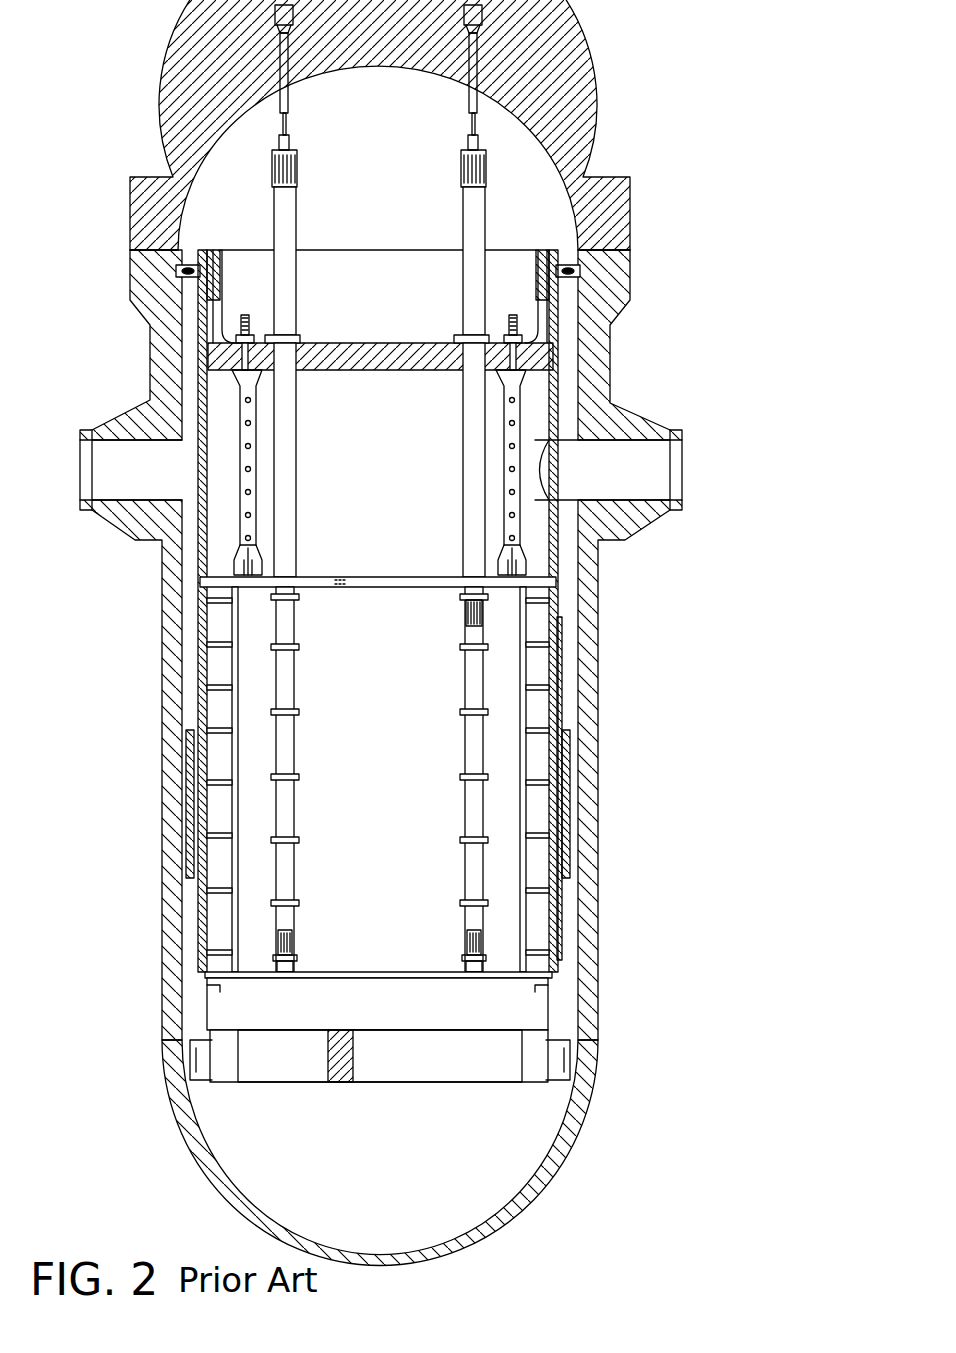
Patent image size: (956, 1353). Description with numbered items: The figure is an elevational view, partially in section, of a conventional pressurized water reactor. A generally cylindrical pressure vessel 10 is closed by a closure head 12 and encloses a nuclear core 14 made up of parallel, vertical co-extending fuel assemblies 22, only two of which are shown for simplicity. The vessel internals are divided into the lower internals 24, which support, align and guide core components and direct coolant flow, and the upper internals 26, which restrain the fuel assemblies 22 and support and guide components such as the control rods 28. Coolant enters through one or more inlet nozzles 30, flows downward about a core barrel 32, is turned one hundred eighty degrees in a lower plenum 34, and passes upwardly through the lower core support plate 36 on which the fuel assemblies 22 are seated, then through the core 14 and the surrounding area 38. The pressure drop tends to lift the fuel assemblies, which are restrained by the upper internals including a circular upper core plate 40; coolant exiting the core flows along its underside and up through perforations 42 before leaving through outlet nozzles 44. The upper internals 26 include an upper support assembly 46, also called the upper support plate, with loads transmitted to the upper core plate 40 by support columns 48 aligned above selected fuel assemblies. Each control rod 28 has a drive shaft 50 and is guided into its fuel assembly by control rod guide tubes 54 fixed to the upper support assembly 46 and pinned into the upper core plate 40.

The pressure vessel 10 is at (597, 652).
The closure head 12 is at (622, 213).
The nuclear core 14 is at (399, 772).
The fuel assemblies 22 is at (297, 680).
The lower internals 24 is at (400, 1016).
The upper internals 26 is at (400, 447).
The control rods 28 is at (466, 612).
The inlet nozzles 30 is at (110, 410).
The core barrel 32 is at (200, 576).
The lower plenum 34 is at (540, 1130).
The lower core support plate 36 is at (440, 970).
The surrounding area 38 is at (543, 707).
The upper core plate 40 is at (417, 595).
The perforations 42 is at (345, 577).
The outlet nozzles 44 is at (648, 418).
The upper support assembly 46 is at (545, 250).
The support columns 48 is at (260, 468).
The drive shaft 50 is at (460, 165).
The control rod guide tubes 54 is at (300, 406).